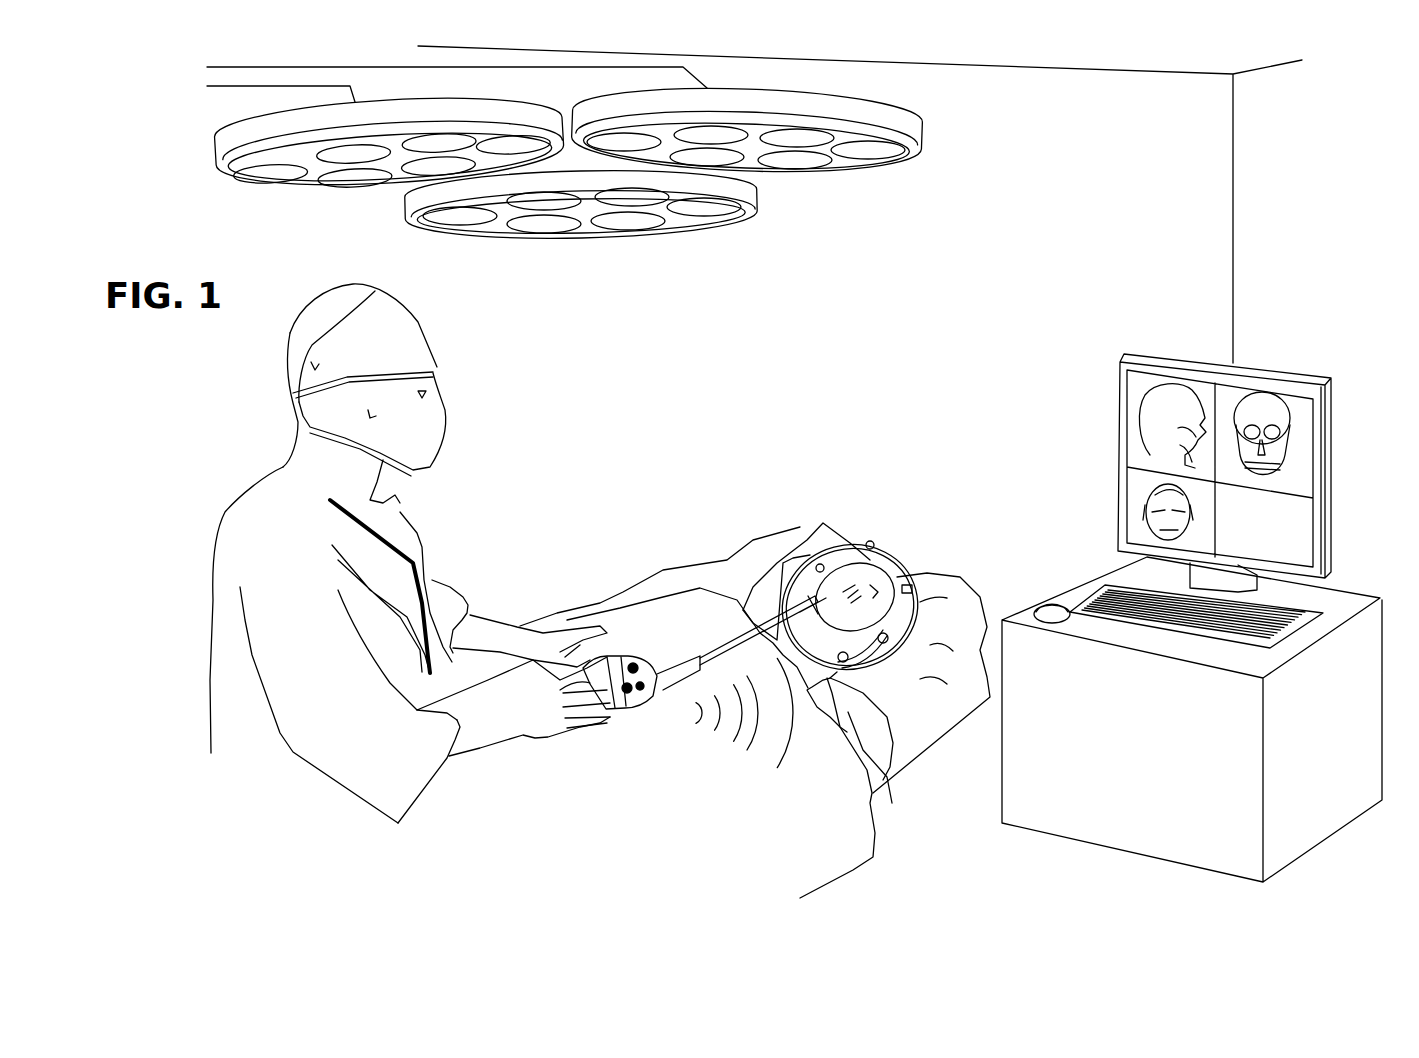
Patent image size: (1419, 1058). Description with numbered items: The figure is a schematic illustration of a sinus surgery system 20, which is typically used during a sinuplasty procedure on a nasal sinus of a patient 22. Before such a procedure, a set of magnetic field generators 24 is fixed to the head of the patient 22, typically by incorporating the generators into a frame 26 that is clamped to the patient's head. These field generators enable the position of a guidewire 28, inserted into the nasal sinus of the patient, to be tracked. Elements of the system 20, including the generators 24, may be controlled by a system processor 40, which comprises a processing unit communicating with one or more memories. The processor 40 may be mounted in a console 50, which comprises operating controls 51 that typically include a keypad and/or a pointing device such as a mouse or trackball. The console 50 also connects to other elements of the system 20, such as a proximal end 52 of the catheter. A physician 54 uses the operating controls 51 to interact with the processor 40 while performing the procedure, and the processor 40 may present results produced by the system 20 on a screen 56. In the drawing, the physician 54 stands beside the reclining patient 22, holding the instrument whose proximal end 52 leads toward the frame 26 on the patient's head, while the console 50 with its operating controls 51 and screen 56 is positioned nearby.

The sinus surgery system 20 is at (1197, 242).
The patient 22 is at (892, 803).
The magnetic field generators 24 is at (785, 565).
The frame 26 is at (907, 575).
The guidewire 28 is at (737, 647).
The system processor 40 is at (1083, 557).
The console 50 is at (1367, 647).
The operating controls 51 is at (1070, 607).
The proximal end 52 is at (628, 656).
The physician 54 is at (267, 500).
The screen 56 is at (1278, 383).